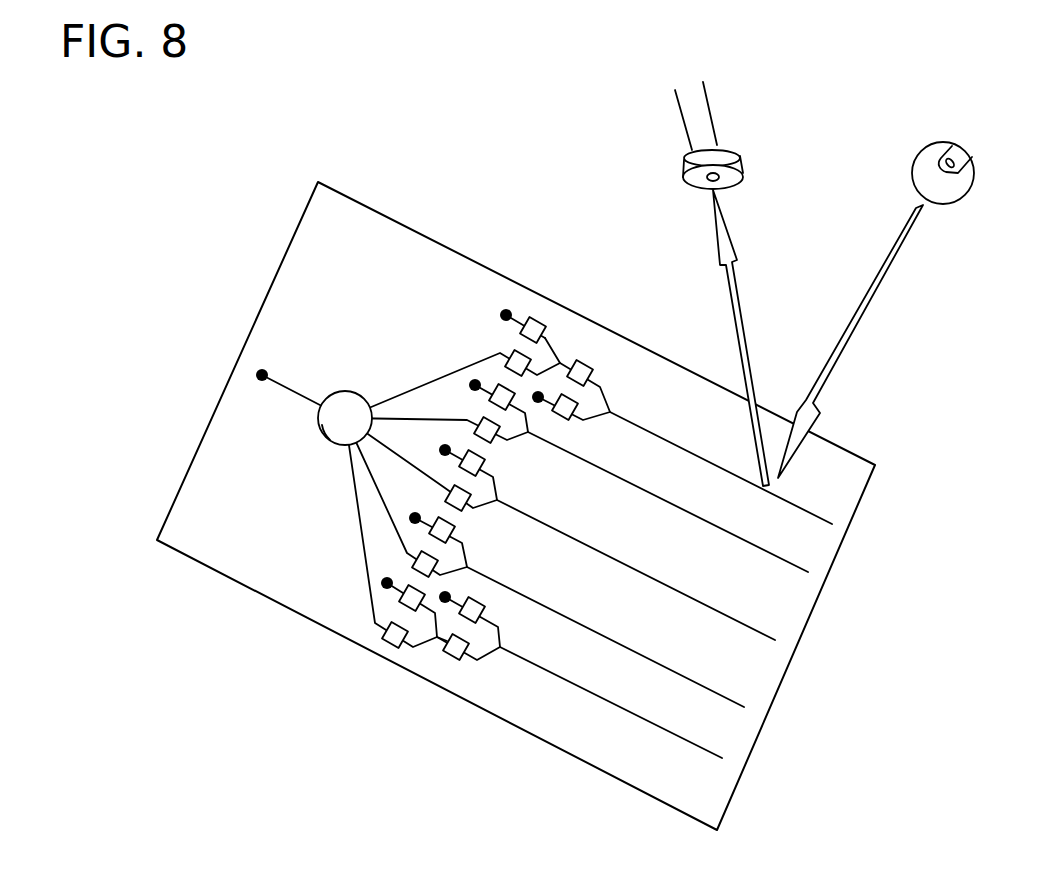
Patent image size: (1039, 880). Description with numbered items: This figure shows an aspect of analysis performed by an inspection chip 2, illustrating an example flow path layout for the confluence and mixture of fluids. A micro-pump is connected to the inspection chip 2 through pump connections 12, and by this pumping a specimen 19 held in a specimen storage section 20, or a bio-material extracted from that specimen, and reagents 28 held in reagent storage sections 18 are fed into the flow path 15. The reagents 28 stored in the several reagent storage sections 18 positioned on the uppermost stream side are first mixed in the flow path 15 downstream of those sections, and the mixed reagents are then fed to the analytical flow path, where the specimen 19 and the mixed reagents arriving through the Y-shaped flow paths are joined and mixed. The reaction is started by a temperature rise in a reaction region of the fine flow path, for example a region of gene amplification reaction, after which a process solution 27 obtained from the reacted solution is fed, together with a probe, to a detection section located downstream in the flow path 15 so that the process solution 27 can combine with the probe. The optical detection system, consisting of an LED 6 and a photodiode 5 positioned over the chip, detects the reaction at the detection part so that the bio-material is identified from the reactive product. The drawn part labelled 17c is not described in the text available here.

The inspection chip 2 is at (190, 242).
The photodiode 5 is at (732, 150).
The LED 6 is at (974, 178).
The pump connection 12 is at (266, 371).
The flow path 15 is at (283, 393).
The connection portion 17c is at (450, 650).
The reagent storage section 18 is at (536, 322).
The specimen 19 is at (348, 403).
The specimen storage section 20 is at (330, 430).
The process solution 27 is at (457, 656).
The reagent 28 is at (545, 327).